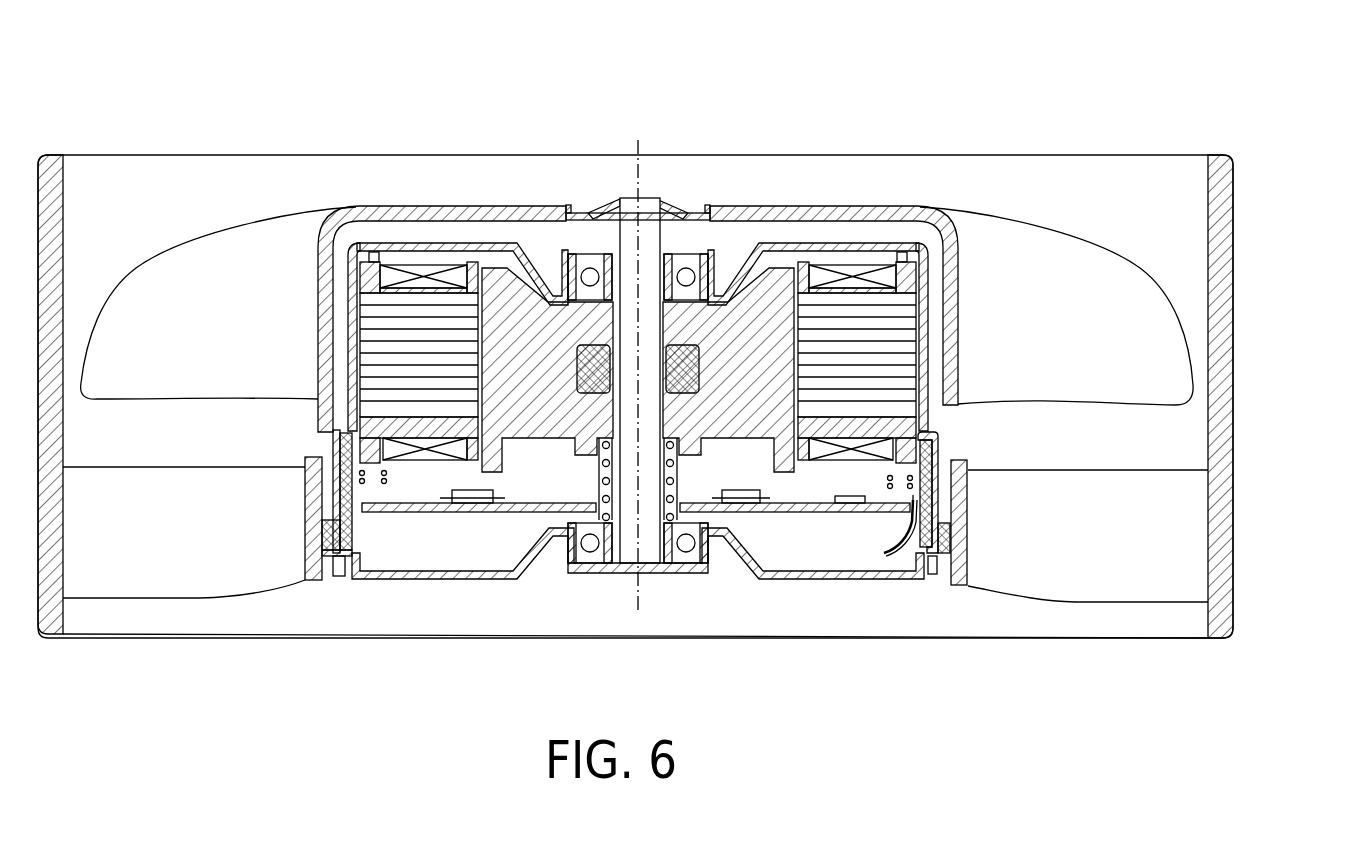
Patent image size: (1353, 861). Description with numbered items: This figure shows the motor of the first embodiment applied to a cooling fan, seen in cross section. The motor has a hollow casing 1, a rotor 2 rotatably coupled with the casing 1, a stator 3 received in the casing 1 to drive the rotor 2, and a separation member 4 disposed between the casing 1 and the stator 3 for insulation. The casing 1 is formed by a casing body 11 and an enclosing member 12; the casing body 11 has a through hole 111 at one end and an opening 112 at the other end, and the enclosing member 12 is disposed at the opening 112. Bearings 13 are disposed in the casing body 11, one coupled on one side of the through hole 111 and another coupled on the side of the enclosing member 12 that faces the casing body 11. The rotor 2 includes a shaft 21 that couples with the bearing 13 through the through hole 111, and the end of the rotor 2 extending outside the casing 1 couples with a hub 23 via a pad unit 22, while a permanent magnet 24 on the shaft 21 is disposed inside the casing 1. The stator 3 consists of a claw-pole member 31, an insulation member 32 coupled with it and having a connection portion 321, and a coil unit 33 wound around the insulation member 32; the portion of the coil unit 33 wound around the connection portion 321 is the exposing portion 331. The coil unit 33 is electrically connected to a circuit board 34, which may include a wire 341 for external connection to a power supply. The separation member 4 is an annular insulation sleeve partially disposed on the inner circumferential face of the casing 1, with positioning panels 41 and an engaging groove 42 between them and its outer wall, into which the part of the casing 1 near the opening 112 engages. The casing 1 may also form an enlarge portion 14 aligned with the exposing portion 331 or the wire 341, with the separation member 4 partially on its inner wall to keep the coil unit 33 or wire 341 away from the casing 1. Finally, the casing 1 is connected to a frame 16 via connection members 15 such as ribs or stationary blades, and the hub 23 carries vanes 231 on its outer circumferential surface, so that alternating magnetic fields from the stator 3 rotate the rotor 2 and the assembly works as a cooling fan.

The casing 1 is at (720, 393).
The casing body 11 is at (924, 312).
The through hole 111 is at (583, 215).
The opening 112 is at (930, 578).
The enclosing member 12 is at (799, 580).
The bearing 13 is at (556, 211).
The enlarge portion 14 is at (938, 486).
The connection member 15 is at (1160, 487).
The frame 16 is at (1235, 279).
The rotor 2 is at (617, 71).
The shaft 21 is at (647, 203).
The pad unit 22 is at (594, 212).
The hub 23 is at (800, 206).
The vane 231 is at (1097, 250).
The permanent magnet 24 is at (766, 276).
The stator 3 is at (565, 405).
The claw-pole member 31 is at (367, 307).
The insulation member 32 is at (448, 432).
The connection portion 321 is at (376, 486).
The coil unit 33 is at (858, 268).
The exposing portion 331 is at (338, 474).
The circuit board 34 is at (797, 514).
The wire 341 is at (882, 553).
The separation member 4 is at (1055, 569).
The positioning panel 41 is at (955, 557).
The engaging groove 42 is at (941, 540).